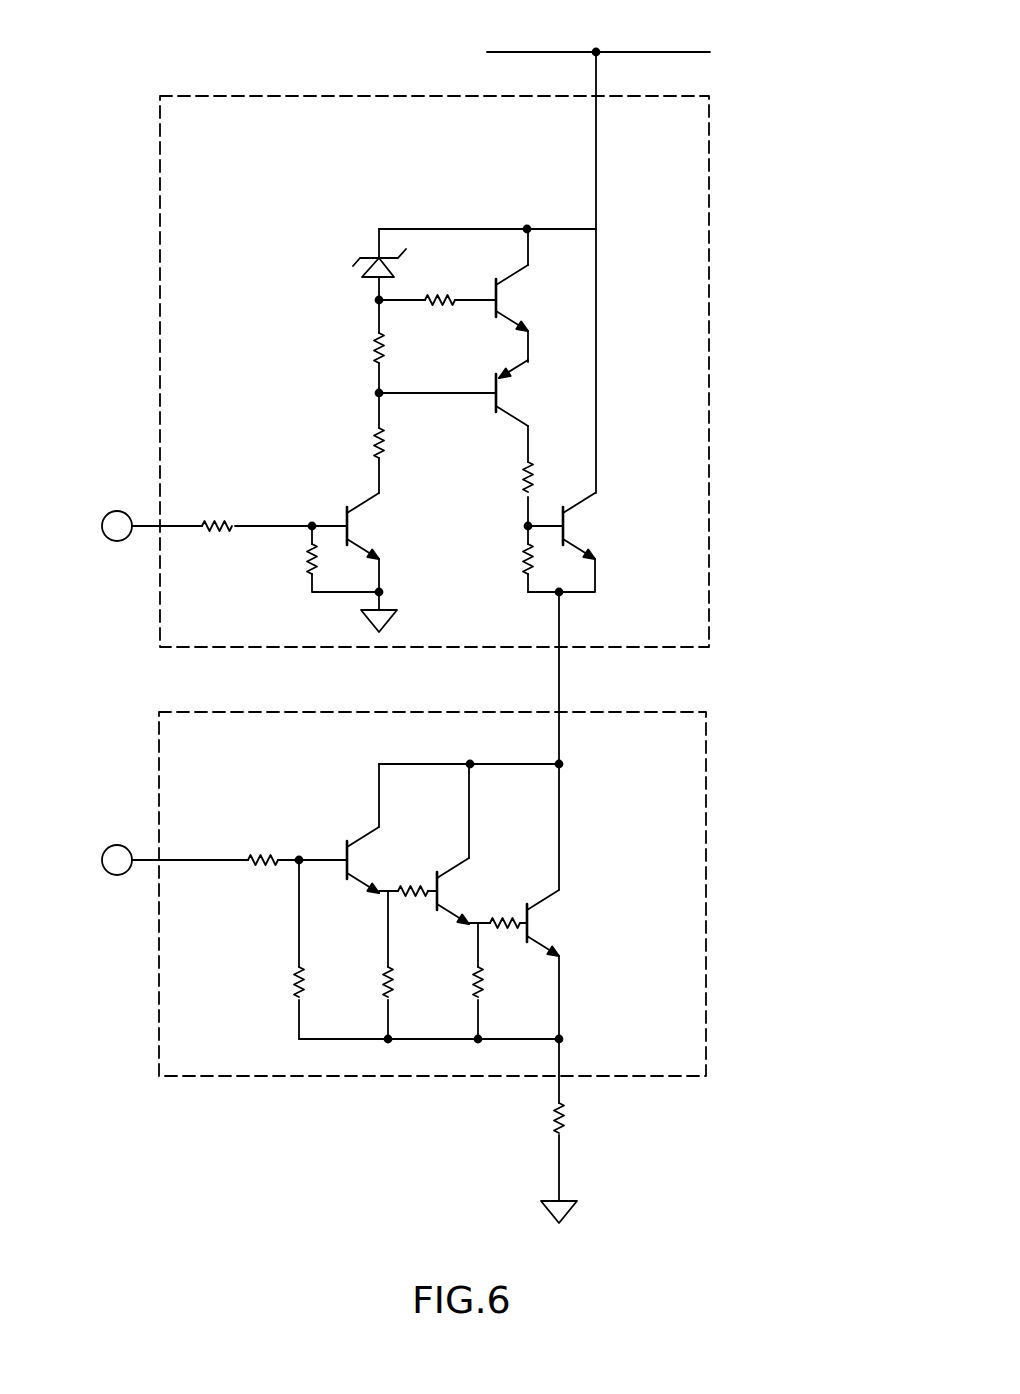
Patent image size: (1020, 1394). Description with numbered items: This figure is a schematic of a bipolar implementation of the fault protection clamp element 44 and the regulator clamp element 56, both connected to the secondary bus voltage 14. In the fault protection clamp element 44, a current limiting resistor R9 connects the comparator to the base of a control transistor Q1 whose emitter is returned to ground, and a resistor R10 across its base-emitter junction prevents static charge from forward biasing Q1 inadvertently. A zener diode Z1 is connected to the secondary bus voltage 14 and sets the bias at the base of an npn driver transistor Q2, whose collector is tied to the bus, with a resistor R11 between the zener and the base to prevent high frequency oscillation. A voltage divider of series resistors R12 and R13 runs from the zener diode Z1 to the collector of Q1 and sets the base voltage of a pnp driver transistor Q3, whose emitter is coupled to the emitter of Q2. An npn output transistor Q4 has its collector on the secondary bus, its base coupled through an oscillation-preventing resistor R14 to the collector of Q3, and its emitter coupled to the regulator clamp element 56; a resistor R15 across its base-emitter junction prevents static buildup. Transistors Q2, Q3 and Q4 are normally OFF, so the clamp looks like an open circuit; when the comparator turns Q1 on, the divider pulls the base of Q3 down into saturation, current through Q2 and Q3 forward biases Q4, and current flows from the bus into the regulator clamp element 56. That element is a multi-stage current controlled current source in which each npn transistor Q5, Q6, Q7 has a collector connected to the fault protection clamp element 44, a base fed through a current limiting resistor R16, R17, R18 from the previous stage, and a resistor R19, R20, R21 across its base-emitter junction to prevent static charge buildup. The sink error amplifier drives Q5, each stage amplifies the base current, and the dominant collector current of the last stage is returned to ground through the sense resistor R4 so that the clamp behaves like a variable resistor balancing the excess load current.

The secondary bus voltage 14 is at (532, 52).
The fault protection clamp element 44 is at (709, 217).
The regulator clamp element 56 is at (706, 850).
The zener diode Z1 is at (362, 264).
The sense resistor R4 is at (537, 1120).
The current limiting resistor R9 is at (224, 514).
The resistor R10 is at (312, 559).
The resistor R11 is at (437, 319).
The resistor R12 is at (351, 346).
The resistor R13 is at (351, 443).
The resistor R14 is at (497, 494).
The resistor R15 is at (497, 559).
The current limiting resistor R16 is at (224, 848).
The current limiting resistor R17 is at (411, 876).
The current limiting resistor R18 is at (501, 908).
The resistor R19 is at (269, 949).
The resistor R20 is at (359, 1003).
The resistor R21 is at (449, 1003).
The control transistor Q1 is at (370, 542).
The npn driver transistor Q2 is at (517, 295).
The pnp driver transistor Q3 is at (517, 411).
The npn output transistor Q4 is at (567, 542).
The npn transistor Q5 is at (372, 865).
The npn transistor Q6 is at (463, 865).
The npn transistor Q7 is at (547, 901).